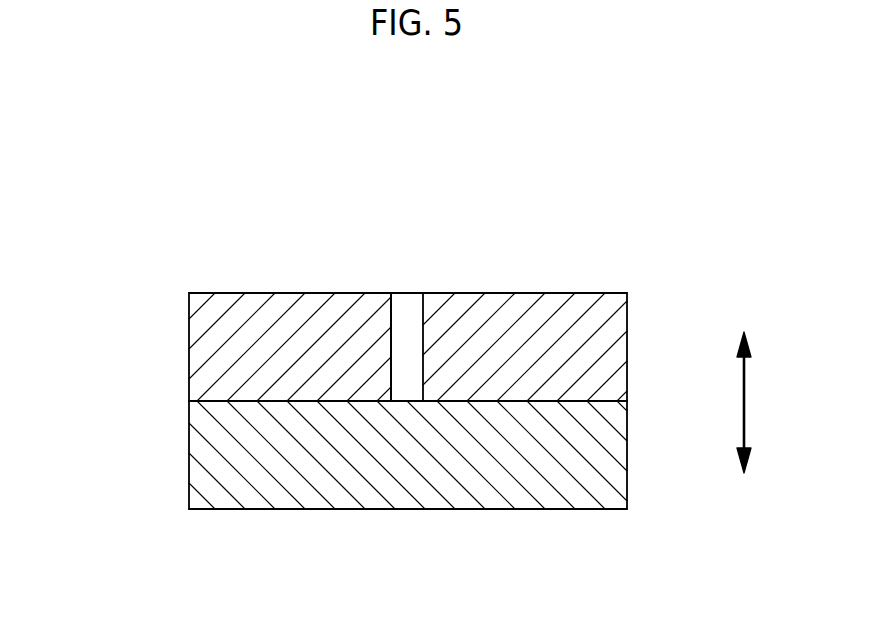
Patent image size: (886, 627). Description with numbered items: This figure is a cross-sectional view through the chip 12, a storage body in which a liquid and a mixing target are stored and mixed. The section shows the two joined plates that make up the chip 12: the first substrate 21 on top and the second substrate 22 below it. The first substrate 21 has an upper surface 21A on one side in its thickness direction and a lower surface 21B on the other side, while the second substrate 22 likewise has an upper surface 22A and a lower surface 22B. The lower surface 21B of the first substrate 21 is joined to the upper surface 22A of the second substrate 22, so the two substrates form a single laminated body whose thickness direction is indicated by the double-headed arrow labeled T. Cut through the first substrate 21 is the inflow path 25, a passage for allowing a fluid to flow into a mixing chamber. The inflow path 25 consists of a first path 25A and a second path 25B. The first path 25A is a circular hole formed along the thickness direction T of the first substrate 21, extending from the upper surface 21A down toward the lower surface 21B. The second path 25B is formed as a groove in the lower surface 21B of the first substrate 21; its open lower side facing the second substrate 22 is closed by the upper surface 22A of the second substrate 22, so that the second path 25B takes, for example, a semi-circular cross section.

The chip 12 is at (115, 215).
The first substrate 21 is at (188, 360).
The upper surface 21A is at (595, 293).
The lower surface 21B is at (612, 404).
The second substrate 22 is at (188, 475).
The upper surface 22A is at (607, 398).
The lower surface 22B is at (583, 509).
The inflow path 25 is at (483, 202).
The first path 25A is at (393, 318).
The second path 25B is at (418, 395).
The T direction T is at (747, 400).